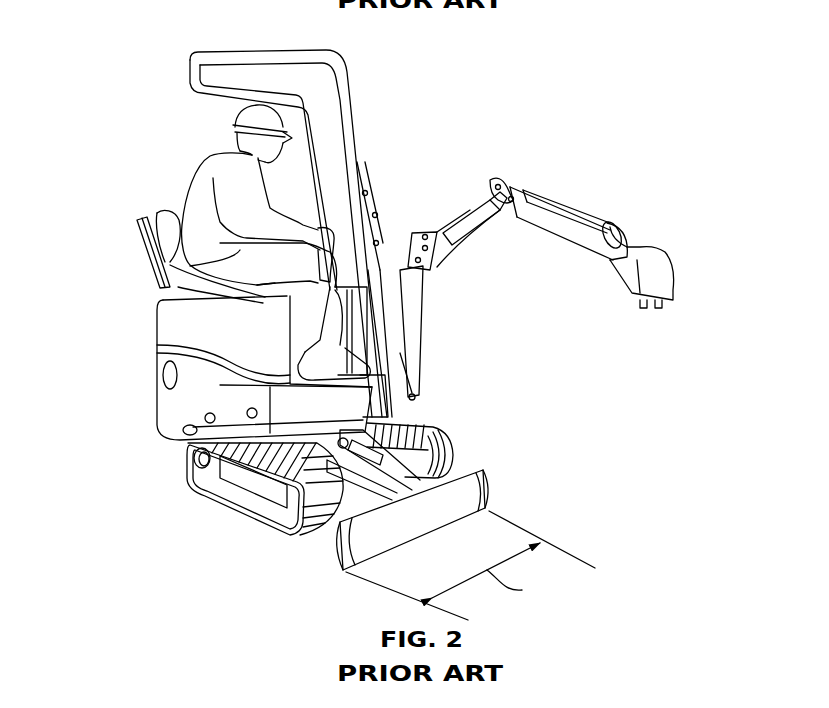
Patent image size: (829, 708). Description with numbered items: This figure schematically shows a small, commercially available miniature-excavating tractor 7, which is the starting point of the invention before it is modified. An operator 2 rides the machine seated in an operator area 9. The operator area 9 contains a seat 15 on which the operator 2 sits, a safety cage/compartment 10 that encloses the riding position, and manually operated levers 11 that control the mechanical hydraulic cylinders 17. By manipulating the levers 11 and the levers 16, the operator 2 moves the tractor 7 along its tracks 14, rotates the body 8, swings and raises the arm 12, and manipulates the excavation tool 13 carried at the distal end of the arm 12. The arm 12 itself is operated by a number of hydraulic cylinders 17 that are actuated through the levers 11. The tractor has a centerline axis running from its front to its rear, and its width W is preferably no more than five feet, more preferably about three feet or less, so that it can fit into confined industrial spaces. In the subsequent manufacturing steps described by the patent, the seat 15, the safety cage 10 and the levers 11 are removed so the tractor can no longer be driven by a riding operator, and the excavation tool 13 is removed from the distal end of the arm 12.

The operator 2 is at (185, 182).
The miniature-excavating tractor 7 is at (682, 115).
The body 8 is at (177, 403).
The operator area 9 is at (131, 270).
The safety cage/compartment 10 is at (273, 48).
The levers 11 is at (341, 252).
The arm 12 is at (543, 205).
The excavation tool 13 is at (677, 246).
The tracks 14 is at (206, 481).
The seat 15 is at (180, 238).
The levers 16 is at (359, 315).
The hydraulic cylinders 17 is at (584, 204).